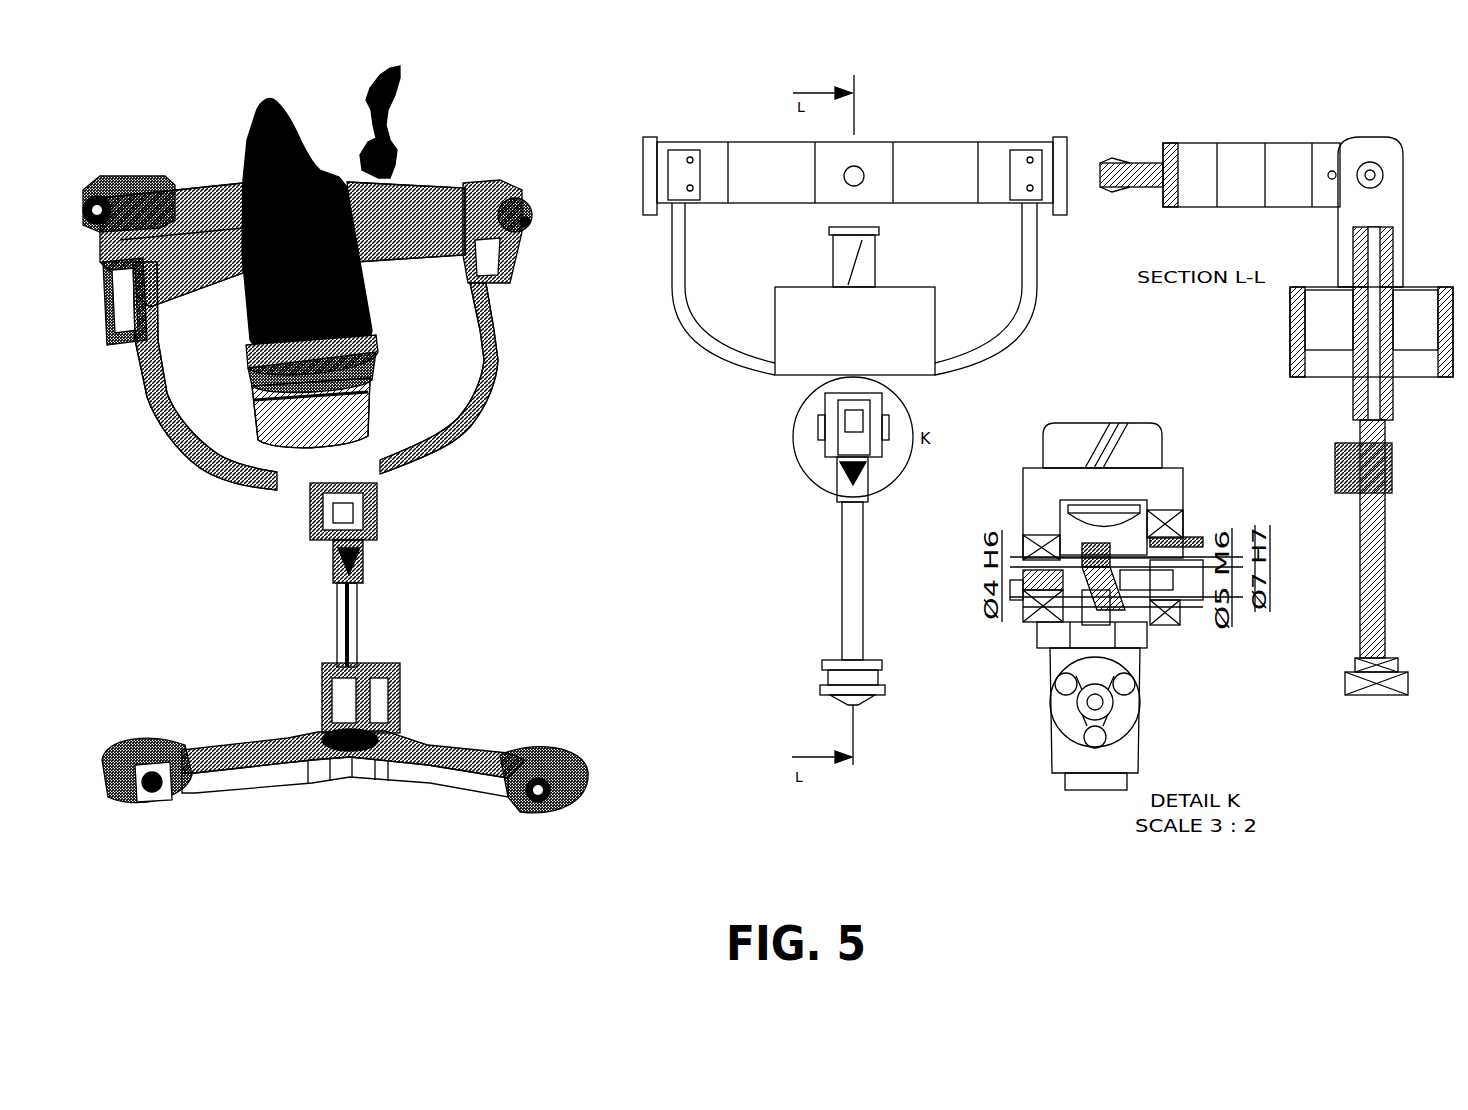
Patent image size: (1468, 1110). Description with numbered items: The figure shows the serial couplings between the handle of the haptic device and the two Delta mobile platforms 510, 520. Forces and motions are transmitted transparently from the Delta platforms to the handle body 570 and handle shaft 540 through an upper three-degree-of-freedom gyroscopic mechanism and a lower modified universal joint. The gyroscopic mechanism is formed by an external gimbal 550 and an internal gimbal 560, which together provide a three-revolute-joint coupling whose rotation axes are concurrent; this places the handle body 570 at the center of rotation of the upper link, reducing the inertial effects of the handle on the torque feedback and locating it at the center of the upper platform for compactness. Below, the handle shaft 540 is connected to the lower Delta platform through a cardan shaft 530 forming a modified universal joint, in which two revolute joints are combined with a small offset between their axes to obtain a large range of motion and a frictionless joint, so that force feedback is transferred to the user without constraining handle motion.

The Delta mobile platform 510 is at (433, 757).
The Delta mobile platform 520 is at (525, 222).
The cardan shaft 530 is at (1133, 632).
The handle shaft 540 is at (1138, 453).
The external gimbal 550 is at (930, 168).
The internal gimbal 560 is at (1027, 288).
The handle body 570 is at (318, 382).